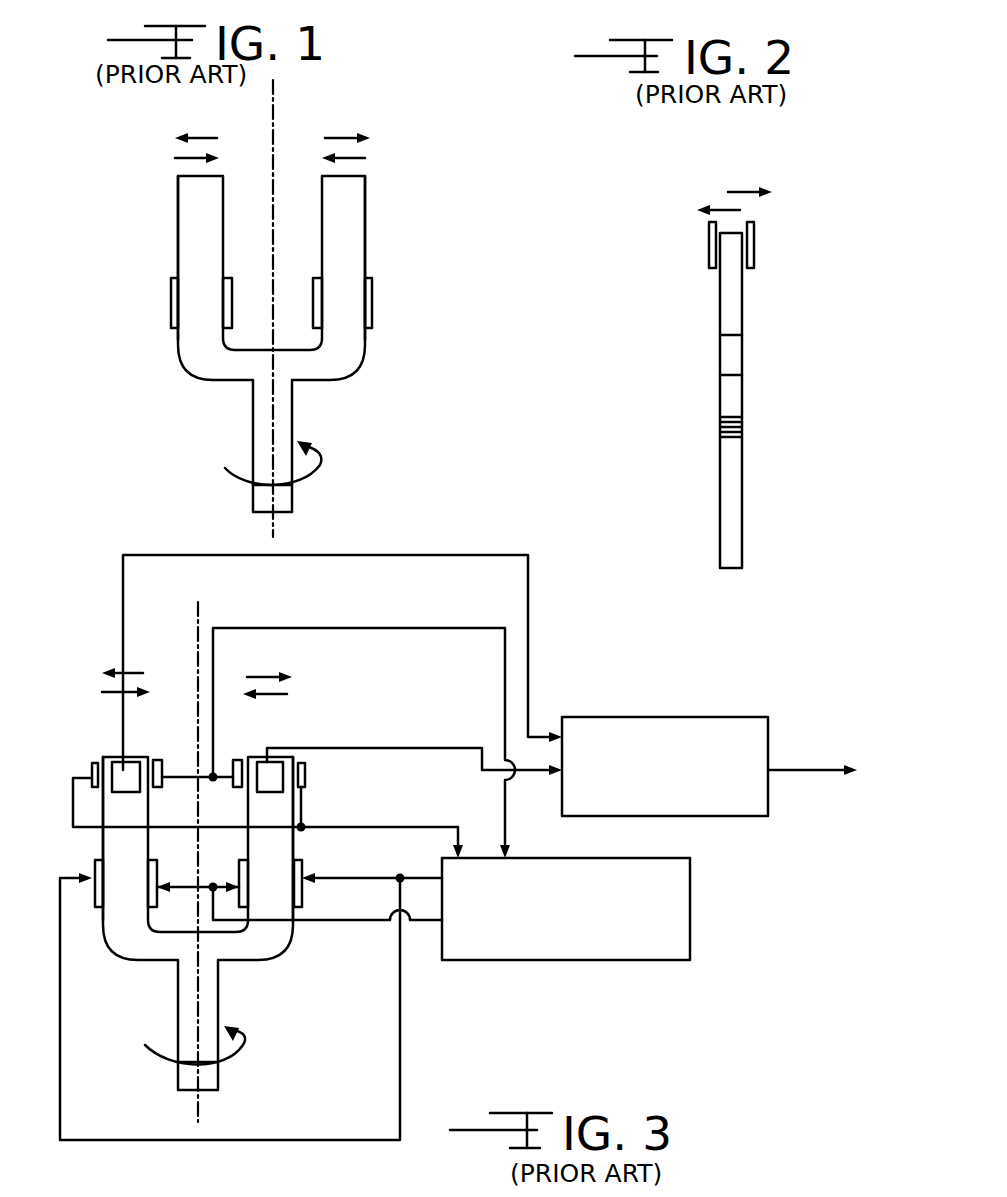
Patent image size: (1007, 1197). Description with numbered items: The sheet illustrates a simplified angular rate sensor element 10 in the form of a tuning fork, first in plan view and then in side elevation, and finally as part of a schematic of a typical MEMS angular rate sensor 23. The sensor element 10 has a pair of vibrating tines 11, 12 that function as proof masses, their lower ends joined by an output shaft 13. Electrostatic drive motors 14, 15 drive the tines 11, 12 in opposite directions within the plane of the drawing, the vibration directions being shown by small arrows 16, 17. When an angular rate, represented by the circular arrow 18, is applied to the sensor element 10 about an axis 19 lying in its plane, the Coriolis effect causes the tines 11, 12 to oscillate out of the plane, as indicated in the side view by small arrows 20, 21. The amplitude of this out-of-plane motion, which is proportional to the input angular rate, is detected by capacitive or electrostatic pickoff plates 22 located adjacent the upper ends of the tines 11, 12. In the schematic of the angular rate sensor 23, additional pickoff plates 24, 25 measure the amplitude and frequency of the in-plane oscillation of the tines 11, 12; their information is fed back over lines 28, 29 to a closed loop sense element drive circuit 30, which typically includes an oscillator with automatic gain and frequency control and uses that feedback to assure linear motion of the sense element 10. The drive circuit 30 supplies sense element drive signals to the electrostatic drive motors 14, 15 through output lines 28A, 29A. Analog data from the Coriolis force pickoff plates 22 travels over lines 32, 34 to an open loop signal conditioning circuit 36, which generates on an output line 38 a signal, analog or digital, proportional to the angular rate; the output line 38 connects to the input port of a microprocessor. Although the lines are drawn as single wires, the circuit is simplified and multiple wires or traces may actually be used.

In FIG. 1, the angular rate sensor element 10 is at (310, 235).
In FIG. 2, the angular rate sensor element 10 is at (840, 213).
In FIG. 3, the angular rate sensor element 10 is at (238, 814).
In FIG. 1, the tine 11 is at (353, 226).
In FIG. 2, the tine 11 is at (737, 312).
In FIG. 3, the tine 11 is at (293, 800).
In FIG. 1, the tine 12 is at (190, 237).
In FIG. 3, the tine 12 is at (103, 800).
In FIG. 1, the output shaft 13 is at (285, 420).
In FIG. 2, the output shaft 13 is at (733, 500).
In FIG. 3, the output shaft 13 is at (212, 1003).
In FIG. 1, the electrostatic drive motor 14 is at (170, 290).
In FIG. 2, the electrostatic drive motor 14 is at (733, 355).
In FIG. 3, the electrostatic drive motor 14 is at (95, 865).
In FIG. 1, the electrostatic drive motor 15 is at (233, 305).
In FIG. 3, the electrostatic drive motor 15 is at (176, 861).
In FIG. 1, the arrow 16 is at (200, 137).
In FIG. 3, the arrow 16 is at (125, 670).
In FIG. 1, the arrow 17 is at (200, 158).
In FIG. 3, the arrow 17 is at (120, 690).
In FIG. 1, the circular arrow 18 is at (320, 466).
In FIG. 3, the circular arrow 18 is at (241, 1047).
In FIG. 1, the axis 19 is at (273, 96).
In FIG. 3, the axis 19 is at (198, 614).
In FIG. 2, the arrow 20 is at (746, 190).
In FIG. 2, the arrow 21 is at (723, 208).
In FIG. 2, the pickoff plates 22 is at (708, 245).
In FIG. 3, the pickoff plates 22 is at (122, 770).
In FIG. 3, the MEMS angular rate sensor 23 is at (415, 540).
In FIG. 3, the pickoff plates 24 is at (92, 772).
In FIG. 3, the pickoff plates 25 is at (155, 760).
In FIG. 3, the line 28 is at (333, 628).
In FIG. 3, the output line 28A is at (357, 876).
In FIG. 3, the line 29 is at (413, 829).
In FIG. 3, the output line 29A is at (327, 923).
In FIG. 3, the sense element drive circuit 30 is at (525, 858).
In FIG. 3, the line 32 is at (481, 558).
In FIG. 3, the line 34 is at (428, 748).
In FIG. 3, the signal conditioning circuit 36 is at (612, 717).
In FIG. 3, the output line 38 is at (790, 768).